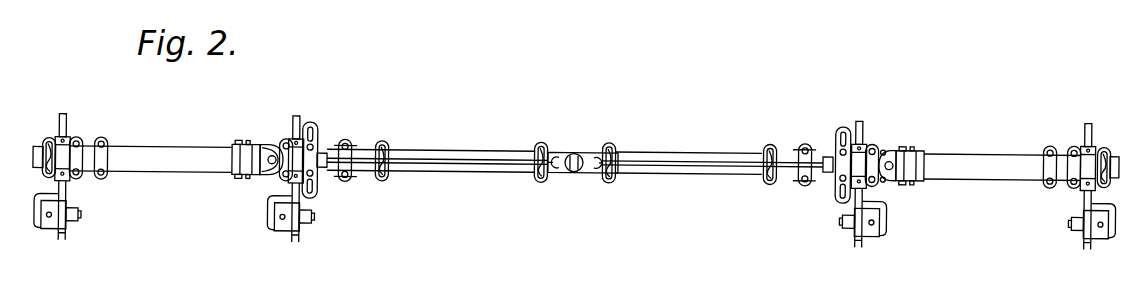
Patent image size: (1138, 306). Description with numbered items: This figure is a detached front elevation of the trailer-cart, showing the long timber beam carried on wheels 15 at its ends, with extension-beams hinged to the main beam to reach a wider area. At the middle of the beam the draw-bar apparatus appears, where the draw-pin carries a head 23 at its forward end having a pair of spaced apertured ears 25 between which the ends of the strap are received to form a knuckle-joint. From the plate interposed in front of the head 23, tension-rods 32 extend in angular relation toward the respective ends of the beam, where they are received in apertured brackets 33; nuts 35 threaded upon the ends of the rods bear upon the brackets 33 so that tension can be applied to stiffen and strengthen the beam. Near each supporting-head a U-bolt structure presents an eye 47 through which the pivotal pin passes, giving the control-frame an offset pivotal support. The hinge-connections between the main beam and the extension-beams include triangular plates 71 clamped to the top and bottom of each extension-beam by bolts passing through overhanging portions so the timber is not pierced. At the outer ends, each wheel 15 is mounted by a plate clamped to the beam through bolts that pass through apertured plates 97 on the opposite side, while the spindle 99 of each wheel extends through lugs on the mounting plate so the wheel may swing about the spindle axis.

The wheels 15 is at (68, 209).
The head 23 is at (575, 170).
The apertured ears 25 is at (587, 169).
The tension-rods 32 is at (680, 166).
The apertured brackets 33 is at (832, 167).
The nuts 35 is at (831, 150).
The eye 47 is at (381, 181).
The triangular plates 71 is at (243, 144).
The apertured plates 97 is at (79, 152).
The spindle 99 is at (864, 128).